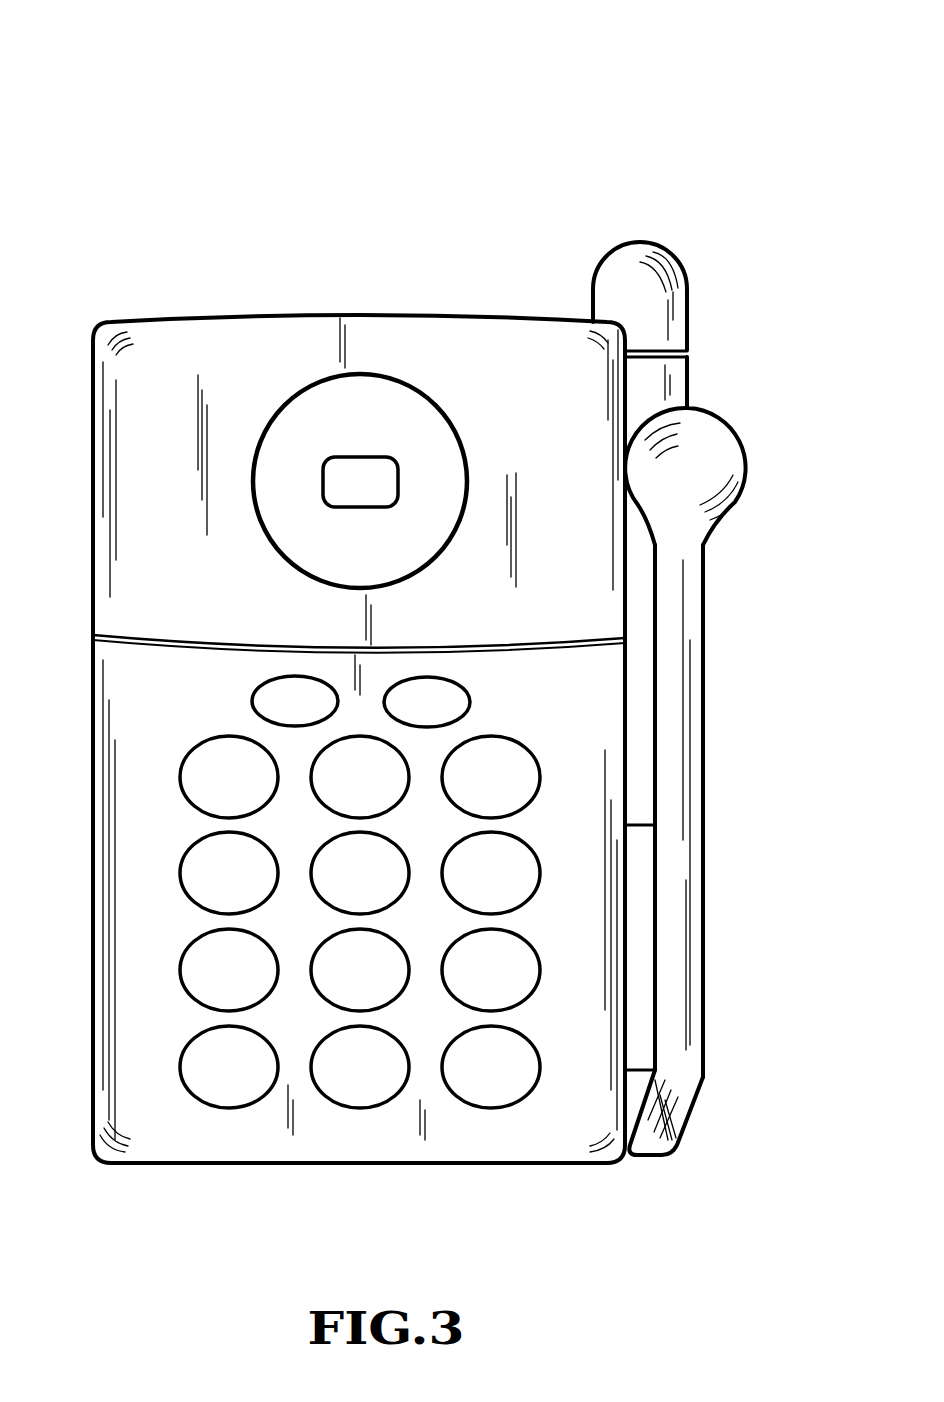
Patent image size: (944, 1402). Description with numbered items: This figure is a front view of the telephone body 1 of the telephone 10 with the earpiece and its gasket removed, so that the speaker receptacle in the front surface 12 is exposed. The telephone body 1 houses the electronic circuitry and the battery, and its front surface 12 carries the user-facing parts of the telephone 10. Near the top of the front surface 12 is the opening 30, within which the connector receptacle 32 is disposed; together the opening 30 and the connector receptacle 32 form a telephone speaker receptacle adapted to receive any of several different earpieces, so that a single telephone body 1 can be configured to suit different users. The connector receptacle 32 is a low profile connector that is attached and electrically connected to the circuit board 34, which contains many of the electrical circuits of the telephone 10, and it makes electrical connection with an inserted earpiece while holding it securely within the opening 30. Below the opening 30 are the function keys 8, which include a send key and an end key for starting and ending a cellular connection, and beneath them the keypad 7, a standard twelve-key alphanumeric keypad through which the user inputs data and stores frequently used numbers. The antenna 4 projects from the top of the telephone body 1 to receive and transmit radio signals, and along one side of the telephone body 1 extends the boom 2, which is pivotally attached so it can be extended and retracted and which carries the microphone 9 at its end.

The telephone 10 is at (726, 58).
The telephone body 1 is at (250, 1153).
The front surface 12 is at (192, 350).
The opening 30 is at (327, 402).
The connector receptacle 32 is at (385, 468).
The circuit board 34 is at (361, 551).
The function keys 8 is at (268, 682).
The keypad 7 is at (73, 735).
The antenna 4 is at (618, 258).
The microphone 9 is at (727, 438).
The boom 2 is at (680, 932).